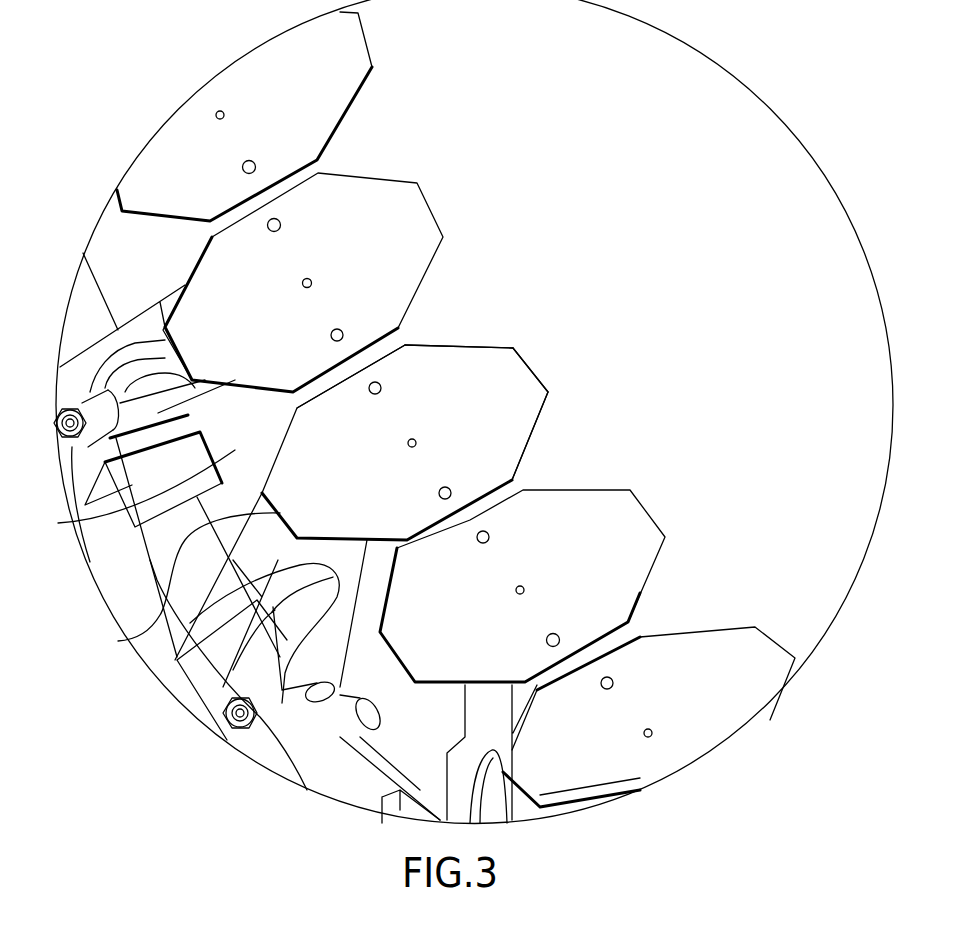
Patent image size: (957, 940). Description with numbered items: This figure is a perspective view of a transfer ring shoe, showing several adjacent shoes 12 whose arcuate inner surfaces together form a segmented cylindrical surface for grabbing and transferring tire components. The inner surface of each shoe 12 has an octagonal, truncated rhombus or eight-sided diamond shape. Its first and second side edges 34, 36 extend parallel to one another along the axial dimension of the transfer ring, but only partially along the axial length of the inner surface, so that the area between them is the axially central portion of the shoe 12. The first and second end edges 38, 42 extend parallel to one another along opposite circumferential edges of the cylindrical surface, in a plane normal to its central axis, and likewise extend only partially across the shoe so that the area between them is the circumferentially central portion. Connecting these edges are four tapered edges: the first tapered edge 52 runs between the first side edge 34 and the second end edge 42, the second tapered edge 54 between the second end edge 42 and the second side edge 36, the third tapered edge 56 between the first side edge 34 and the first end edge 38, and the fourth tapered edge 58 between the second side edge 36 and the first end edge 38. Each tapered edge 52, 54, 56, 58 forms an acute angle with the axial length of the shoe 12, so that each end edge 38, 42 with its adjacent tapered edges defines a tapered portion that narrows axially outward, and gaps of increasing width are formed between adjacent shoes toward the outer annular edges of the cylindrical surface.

The shoe 12 is at (490, 407).
The first side edge 34 is at (367, 368).
The second side edge 36 is at (476, 496).
The first end edge 38 is at (172, 555).
The second end edge 42 is at (530, 377).
The first tapered edge 52 is at (444, 347).
The second tapered edge 54 is at (540, 428).
The third tapered edge 56 is at (130, 512).
The fourth tapered edge 58 is at (300, 560).